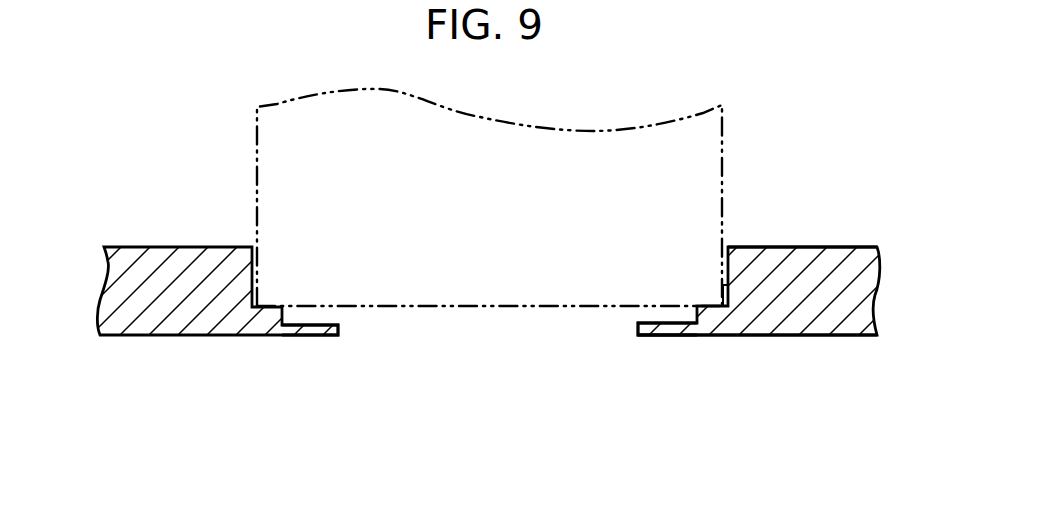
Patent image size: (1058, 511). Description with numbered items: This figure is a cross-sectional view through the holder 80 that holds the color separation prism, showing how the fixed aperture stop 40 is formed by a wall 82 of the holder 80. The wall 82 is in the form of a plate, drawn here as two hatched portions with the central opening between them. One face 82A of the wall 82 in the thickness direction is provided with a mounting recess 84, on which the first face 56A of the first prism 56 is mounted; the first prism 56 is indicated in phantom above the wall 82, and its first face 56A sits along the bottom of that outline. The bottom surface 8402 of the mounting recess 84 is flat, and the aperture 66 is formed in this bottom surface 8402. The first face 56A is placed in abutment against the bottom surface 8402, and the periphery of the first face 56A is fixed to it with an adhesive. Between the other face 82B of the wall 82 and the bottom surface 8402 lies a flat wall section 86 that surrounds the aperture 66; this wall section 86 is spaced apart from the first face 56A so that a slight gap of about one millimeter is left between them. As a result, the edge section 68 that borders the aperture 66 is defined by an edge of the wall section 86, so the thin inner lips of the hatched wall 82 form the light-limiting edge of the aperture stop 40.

The first prism 56 is at (722, 146).
The first face 56A is at (505, 308).
The fixed aperture stop 40 is at (237, 333).
The aperture 66 is at (342, 333).
The holder 80 is at (529, 255).
The wall 82 is at (831, 336).
The one face 82A is at (805, 247).
The other face 82B is at (857, 337).
The mounting recess 84 is at (763, 365).
The bottom surface 8402 is at (711, 303).
The wall section 86 is at (643, 397).
The edge section 68 is at (648, 318).